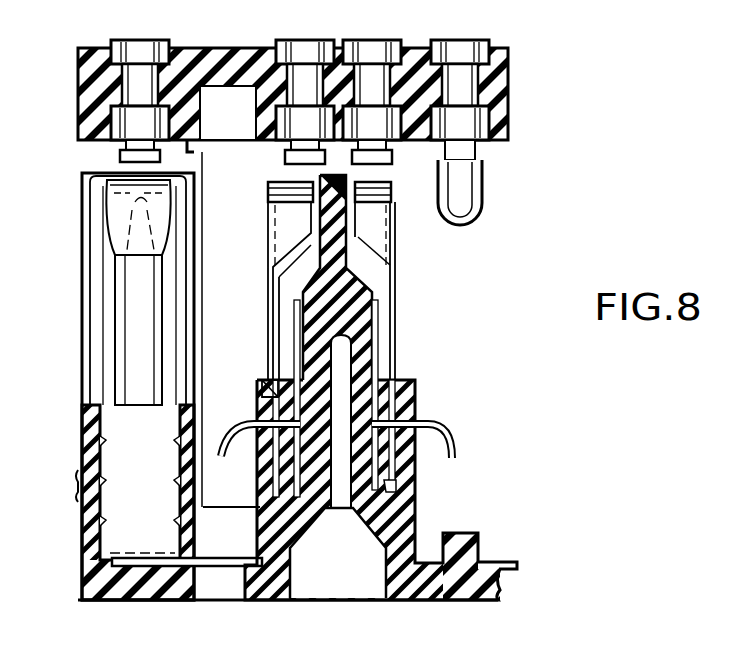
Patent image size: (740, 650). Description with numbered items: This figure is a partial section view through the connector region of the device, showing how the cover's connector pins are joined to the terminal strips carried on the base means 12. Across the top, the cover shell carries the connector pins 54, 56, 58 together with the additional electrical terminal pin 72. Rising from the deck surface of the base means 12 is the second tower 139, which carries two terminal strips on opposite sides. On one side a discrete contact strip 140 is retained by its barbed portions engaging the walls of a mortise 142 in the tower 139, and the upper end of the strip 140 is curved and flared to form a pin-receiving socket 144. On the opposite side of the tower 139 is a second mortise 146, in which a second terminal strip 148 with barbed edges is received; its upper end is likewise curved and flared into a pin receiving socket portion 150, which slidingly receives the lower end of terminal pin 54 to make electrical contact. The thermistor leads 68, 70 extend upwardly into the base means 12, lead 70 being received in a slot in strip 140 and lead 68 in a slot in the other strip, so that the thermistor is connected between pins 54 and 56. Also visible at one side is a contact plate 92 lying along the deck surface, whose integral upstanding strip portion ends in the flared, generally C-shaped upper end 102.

The base means 12 is at (455, 600).
The connector pin 54 is at (280, 46).
The connector pin 56 is at (388, 46).
The connector pin 58 is at (476, 46).
The thermistor electrical lead 68 is at (242, 424).
The thermistor electrical lead 70 is at (436, 420).
The electrical terminal pin 72 is at (128, 46).
The contact plate 92 is at (228, 543).
The flared C-shaped upper end of upstanding strip portion 102 is at (108, 306).
The second tower 139 is at (370, 322).
The contact strip 140 is at (394, 286).
The mortise 142 is at (398, 490).
The pin-receiving socket portion 144 is at (402, 196).
The mortise 146 is at (264, 378).
The second terminal strip 148 is at (276, 306).
The pin receiving socket portion 150 is at (270, 194).